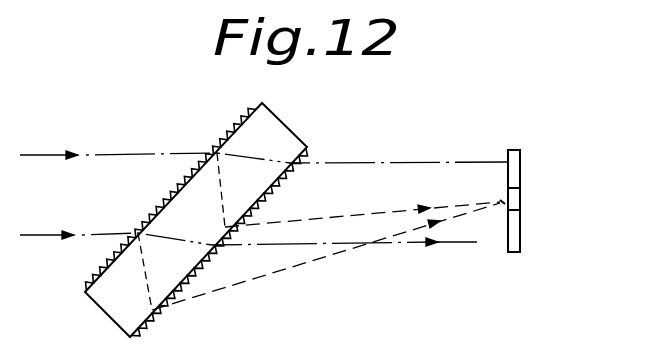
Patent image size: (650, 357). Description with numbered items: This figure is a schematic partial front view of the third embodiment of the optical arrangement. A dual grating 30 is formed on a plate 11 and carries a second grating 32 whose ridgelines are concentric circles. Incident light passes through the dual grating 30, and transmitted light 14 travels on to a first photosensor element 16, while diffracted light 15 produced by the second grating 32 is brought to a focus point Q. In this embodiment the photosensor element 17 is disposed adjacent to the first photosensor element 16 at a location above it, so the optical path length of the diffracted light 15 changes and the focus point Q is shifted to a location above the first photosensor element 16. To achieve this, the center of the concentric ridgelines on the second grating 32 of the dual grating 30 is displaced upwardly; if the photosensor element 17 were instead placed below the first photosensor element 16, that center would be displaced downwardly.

The transparent plate 11 is at (98, 273).
The dual grating 30 is at (285, 135).
The second grating 32 is at (148, 320).
The transmitted light beam 14 is at (371, 158).
The diffracted light 15 is at (326, 258).
The first photosensor element 16 is at (520, 230).
The photosensor element 17 is at (520, 200).
The focus point Q is at (502, 205).